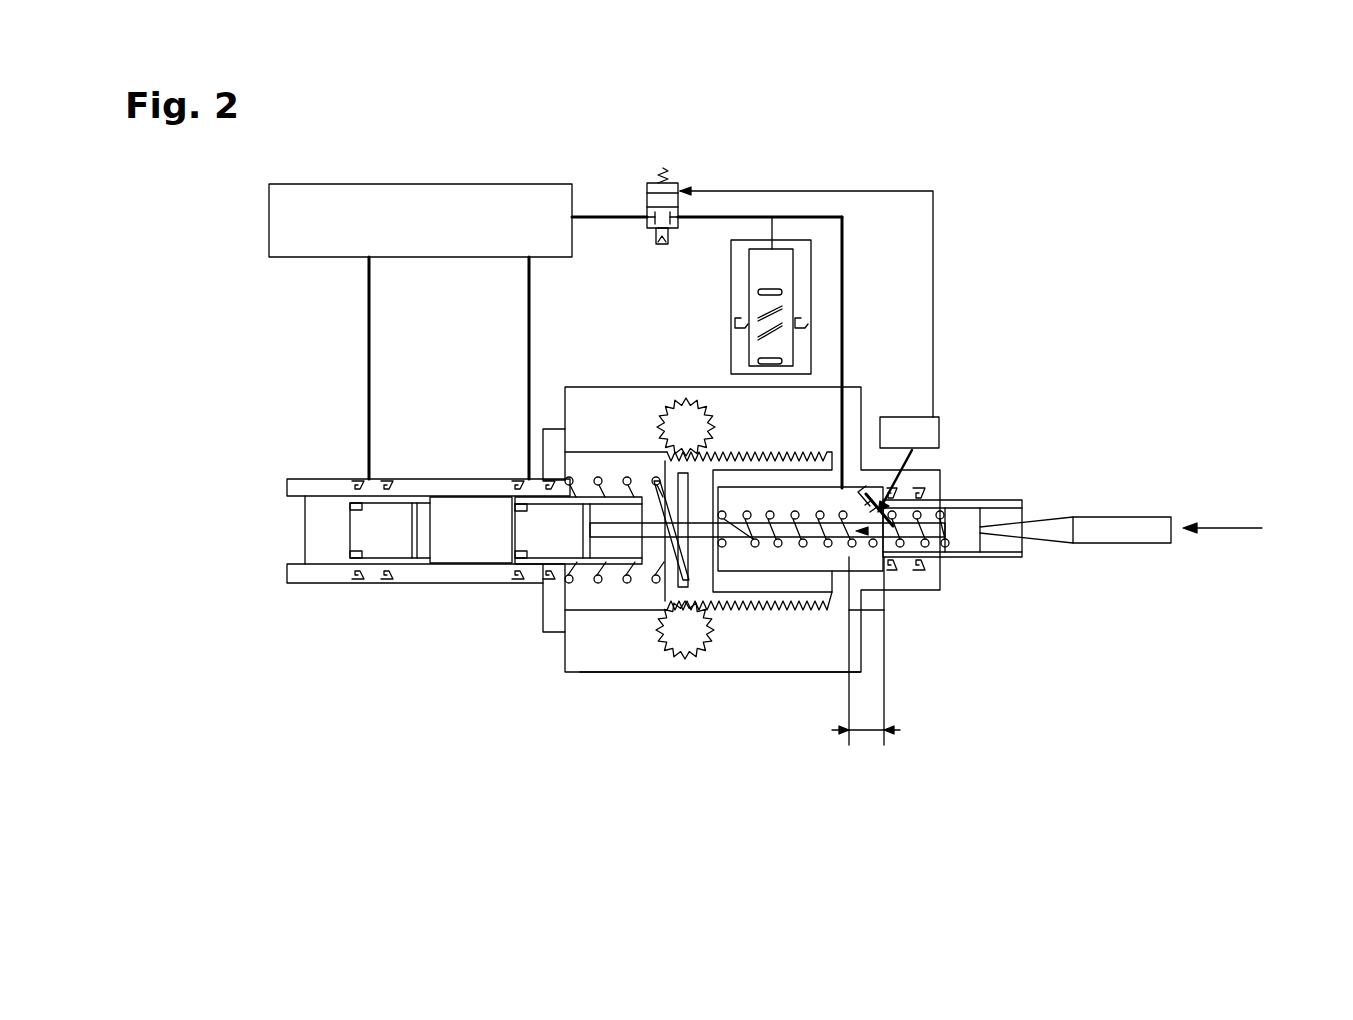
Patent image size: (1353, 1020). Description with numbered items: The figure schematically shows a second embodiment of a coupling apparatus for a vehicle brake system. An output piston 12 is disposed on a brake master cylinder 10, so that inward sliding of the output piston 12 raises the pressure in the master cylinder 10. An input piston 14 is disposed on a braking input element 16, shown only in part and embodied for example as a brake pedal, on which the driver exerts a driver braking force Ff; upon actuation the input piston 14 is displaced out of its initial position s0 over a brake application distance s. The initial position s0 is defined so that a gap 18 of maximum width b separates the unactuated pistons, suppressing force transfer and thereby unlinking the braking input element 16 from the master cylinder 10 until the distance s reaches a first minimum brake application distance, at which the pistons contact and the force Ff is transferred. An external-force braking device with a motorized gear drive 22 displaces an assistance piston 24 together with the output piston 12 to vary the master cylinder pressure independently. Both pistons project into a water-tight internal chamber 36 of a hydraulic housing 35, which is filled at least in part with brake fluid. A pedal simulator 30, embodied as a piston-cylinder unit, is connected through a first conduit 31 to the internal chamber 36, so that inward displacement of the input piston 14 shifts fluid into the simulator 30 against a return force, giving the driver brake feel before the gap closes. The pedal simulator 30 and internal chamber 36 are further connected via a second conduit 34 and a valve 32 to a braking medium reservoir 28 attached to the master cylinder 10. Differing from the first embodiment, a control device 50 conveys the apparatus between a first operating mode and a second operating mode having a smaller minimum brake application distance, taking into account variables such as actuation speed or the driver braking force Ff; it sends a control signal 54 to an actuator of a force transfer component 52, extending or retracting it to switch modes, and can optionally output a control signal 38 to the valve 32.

The brake master cylinder 10 is at (425, 572).
The output piston 12 is at (662, 532).
The input piston 14 is at (962, 548).
The braking input element 16 is at (1118, 527).
The gap 18 is at (865, 612).
The motorized gear drive 22 is at (677, 420).
The assistance piston 24 is at (777, 602).
The braking medium reservoir 28 is at (348, 197).
The pedal simulator 30 is at (805, 278).
The first conduit 31 is at (843, 232).
The valve 32 is at (680, 190).
The second conduit 34 is at (716, 218).
The hydraulic housing 35 is at (806, 668).
The internal chamber 36 is at (802, 498).
The control signal 38 is at (933, 280).
The control device 50 is at (935, 433).
The force transfer component 52 is at (915, 497).
The control signal 54 is at (880, 498).
The driver braking force Ff is at (1236, 527).
The brake application distance s is at (866, 530).
The initial position s0 is at (884, 713).
The maximum width b is at (867, 732).